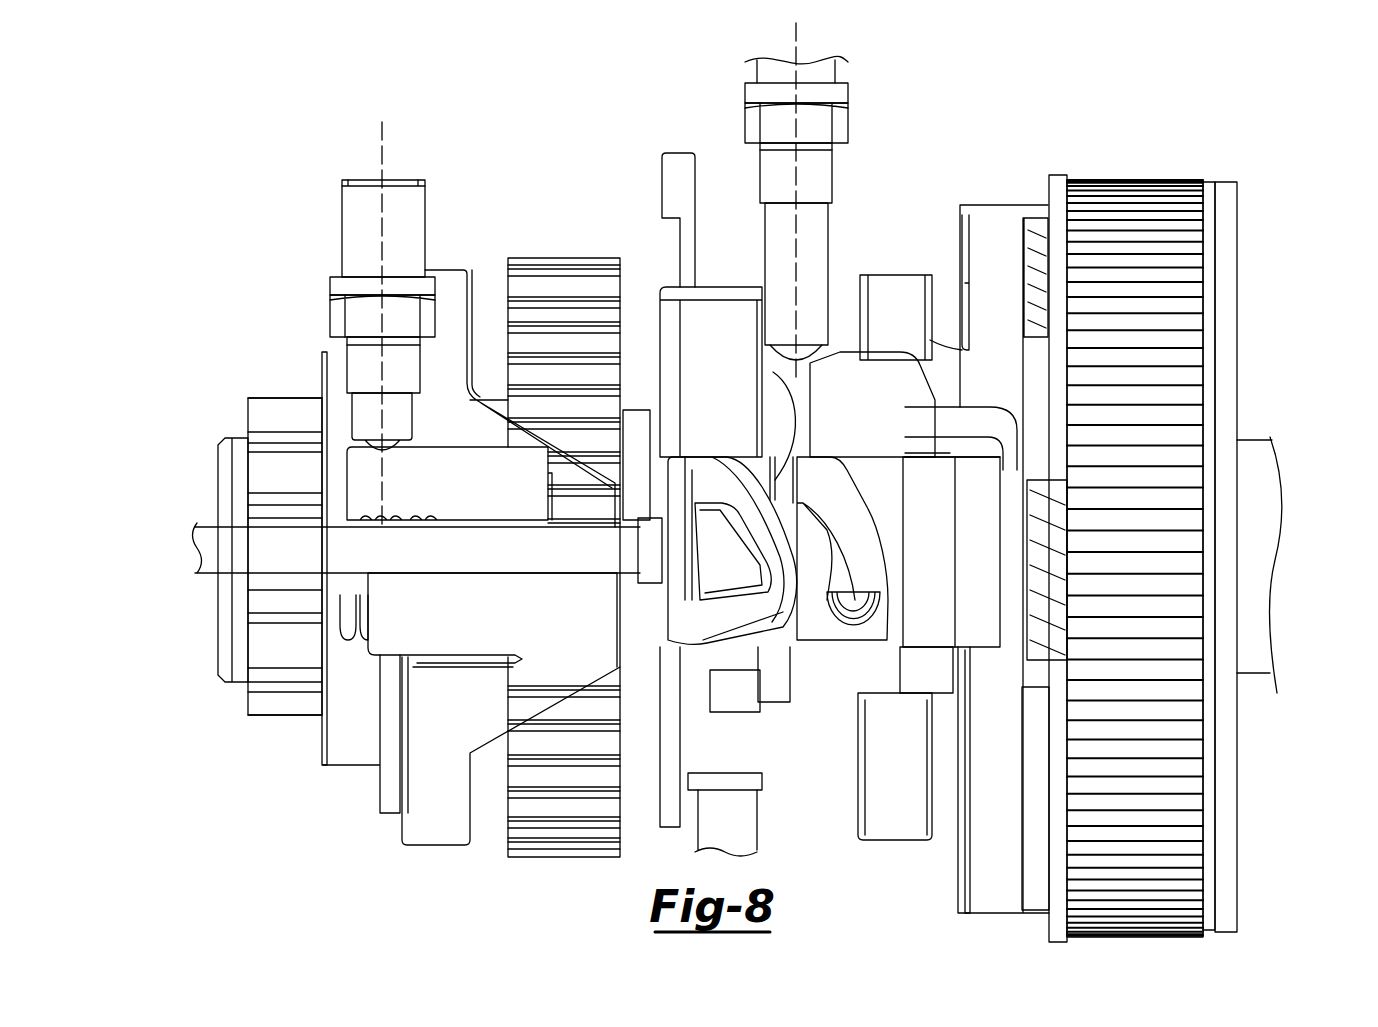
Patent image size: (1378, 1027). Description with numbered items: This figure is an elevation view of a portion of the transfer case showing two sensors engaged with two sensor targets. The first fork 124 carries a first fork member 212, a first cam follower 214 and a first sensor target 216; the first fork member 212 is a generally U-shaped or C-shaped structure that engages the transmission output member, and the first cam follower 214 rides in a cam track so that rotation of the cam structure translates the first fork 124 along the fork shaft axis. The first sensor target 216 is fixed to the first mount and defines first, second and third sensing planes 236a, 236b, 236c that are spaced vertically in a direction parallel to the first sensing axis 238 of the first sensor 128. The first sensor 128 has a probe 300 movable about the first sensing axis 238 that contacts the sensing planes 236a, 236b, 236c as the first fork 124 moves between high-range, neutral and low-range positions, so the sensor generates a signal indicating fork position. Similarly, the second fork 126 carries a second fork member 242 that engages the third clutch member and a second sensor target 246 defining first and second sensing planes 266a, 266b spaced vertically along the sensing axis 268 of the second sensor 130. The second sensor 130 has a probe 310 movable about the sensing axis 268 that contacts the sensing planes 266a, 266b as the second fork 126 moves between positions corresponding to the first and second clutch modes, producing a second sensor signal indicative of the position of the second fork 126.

The first fork 124 is at (893, 457).
The second fork 126 is at (447, 708).
The first sensor 128 is at (830, 125).
The second sensor 130 is at (360, 226).
The first fork member 212 is at (898, 300).
The first cam follower 214 is at (853, 607).
The first sensor target 216 is at (905, 425).
The first sensing plane 236a is at (817, 365).
The second sensing plane 236b is at (843, 345).
The third sensing plane 236c is at (964, 356).
The first sensing axis 238 is at (796, 45).
The second fork member 242 is at (422, 810).
The second sensor target 246 is at (362, 487).
The first sensing plane 266a is at (395, 452).
The second sensing plane 266b is at (440, 447).
The sensing axis 268 is at (382, 124).
The probe 300 is at (775, 372).
The probe 310 is at (372, 446).